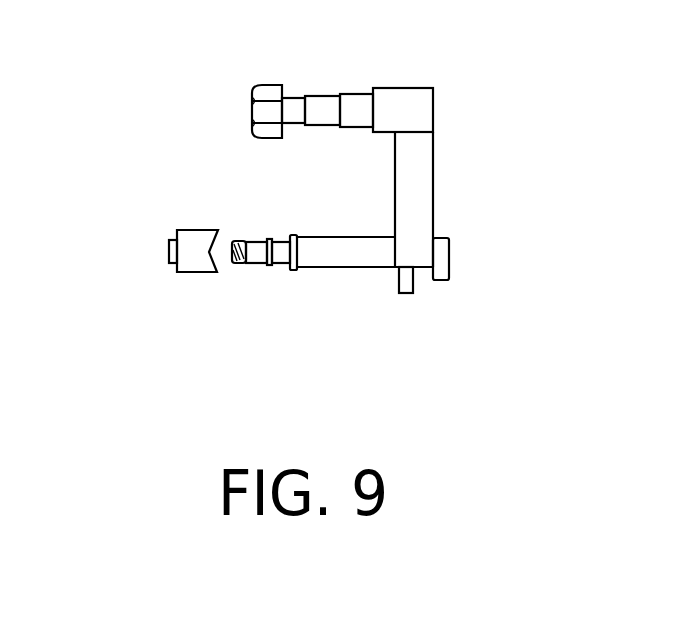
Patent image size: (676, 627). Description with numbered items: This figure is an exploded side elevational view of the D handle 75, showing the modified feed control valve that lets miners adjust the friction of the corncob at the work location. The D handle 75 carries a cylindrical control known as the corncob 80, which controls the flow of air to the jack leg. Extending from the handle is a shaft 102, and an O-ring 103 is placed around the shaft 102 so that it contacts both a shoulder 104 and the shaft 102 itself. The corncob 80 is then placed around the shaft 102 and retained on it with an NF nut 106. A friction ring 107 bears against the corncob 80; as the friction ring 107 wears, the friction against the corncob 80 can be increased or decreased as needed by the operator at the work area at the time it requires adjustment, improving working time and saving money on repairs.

The D handle 75 is at (450, 122).
The corncob 80 is at (176, 291).
The shaft 102 is at (239, 268).
The O-ring 103 is at (288, 225).
The shoulder 104 is at (296, 233).
The NF nut 106 is at (158, 256).
The friction ring 107 is at (268, 280).